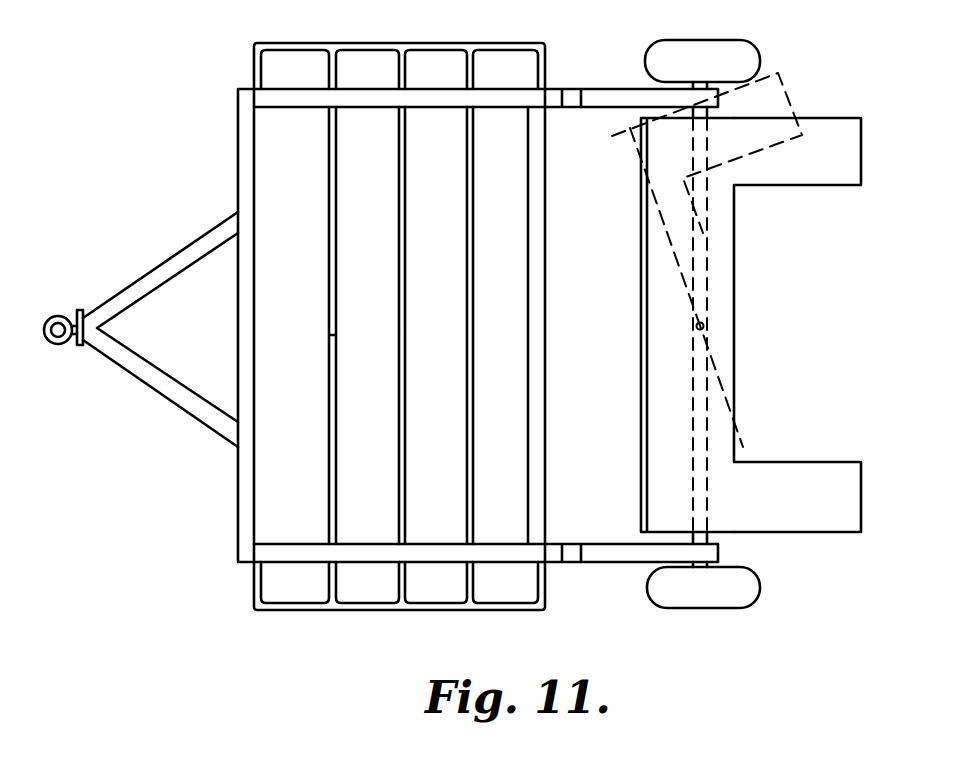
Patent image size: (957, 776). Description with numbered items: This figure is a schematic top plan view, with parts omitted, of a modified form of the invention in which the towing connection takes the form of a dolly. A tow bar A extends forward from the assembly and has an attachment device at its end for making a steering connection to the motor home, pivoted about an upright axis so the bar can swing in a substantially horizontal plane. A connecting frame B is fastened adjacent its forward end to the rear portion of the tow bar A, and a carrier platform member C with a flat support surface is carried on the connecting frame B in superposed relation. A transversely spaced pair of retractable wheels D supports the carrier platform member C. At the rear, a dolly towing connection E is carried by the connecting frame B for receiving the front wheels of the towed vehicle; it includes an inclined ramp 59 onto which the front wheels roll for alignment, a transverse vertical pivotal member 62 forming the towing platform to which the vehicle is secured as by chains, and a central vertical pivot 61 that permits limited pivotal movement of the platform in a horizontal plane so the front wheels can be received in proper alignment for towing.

The tow bar A is at (152, 380).
The connecting frame B is at (385, 553).
The carrier platform member C is at (302, 553).
The retractable wheels D is at (740, 45).
The towing connection E is at (668, 522).
The inclined ramp 59 is at (815, 517).
The central vertical pivot 61 is at (704, 324).
The transverse vertical pivotal member 62 is at (730, 363).